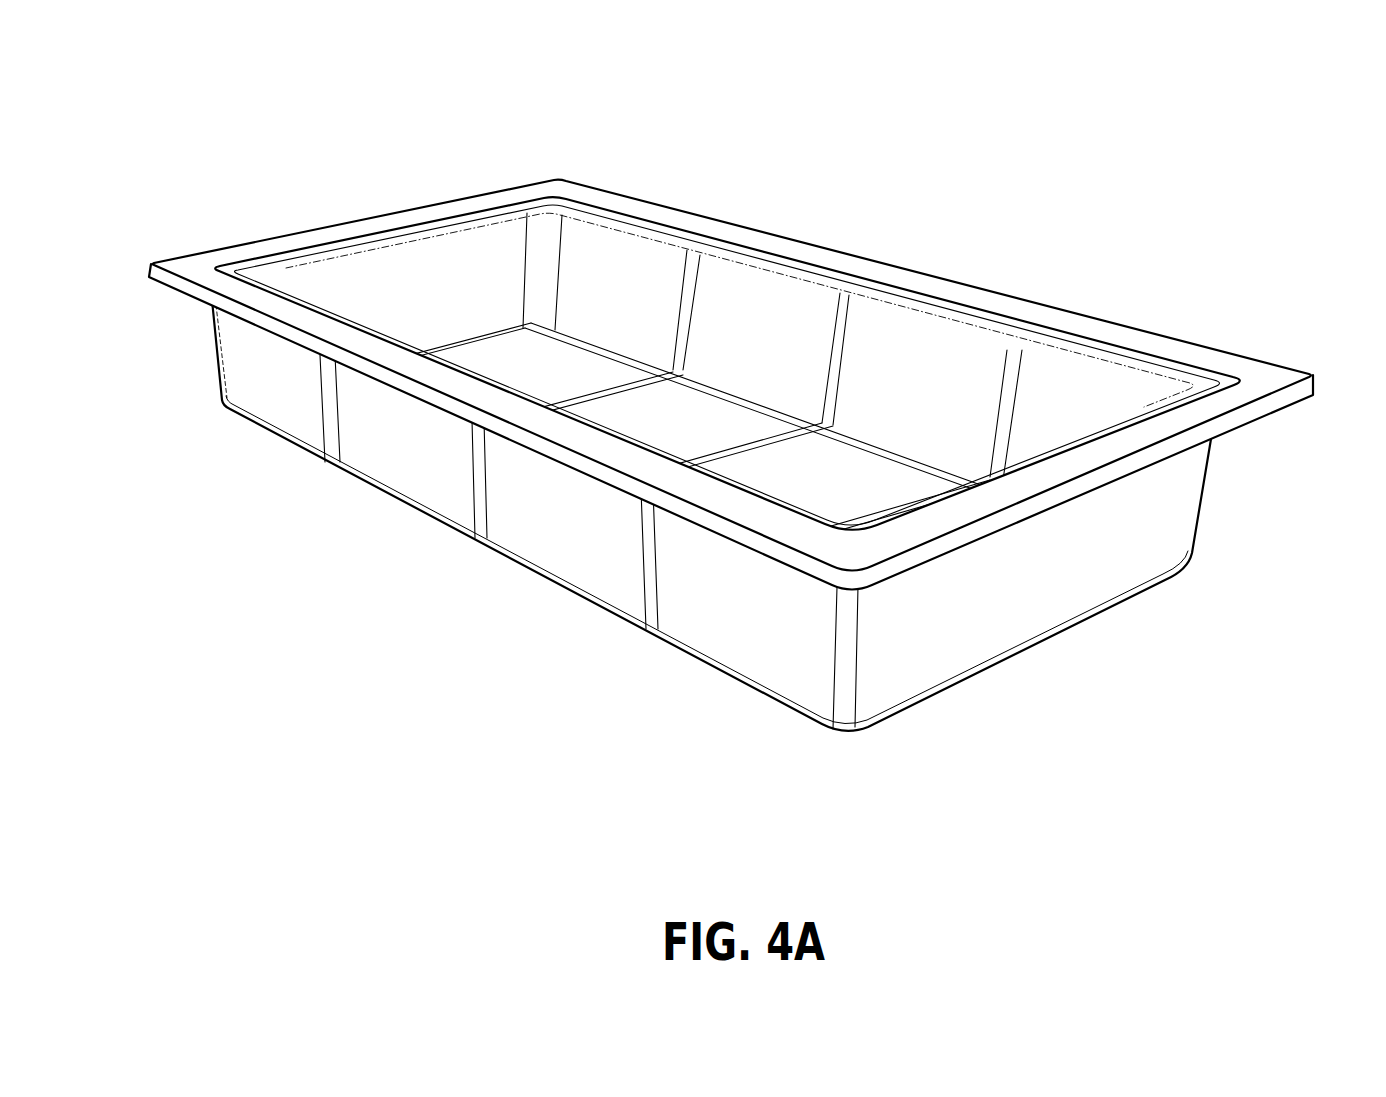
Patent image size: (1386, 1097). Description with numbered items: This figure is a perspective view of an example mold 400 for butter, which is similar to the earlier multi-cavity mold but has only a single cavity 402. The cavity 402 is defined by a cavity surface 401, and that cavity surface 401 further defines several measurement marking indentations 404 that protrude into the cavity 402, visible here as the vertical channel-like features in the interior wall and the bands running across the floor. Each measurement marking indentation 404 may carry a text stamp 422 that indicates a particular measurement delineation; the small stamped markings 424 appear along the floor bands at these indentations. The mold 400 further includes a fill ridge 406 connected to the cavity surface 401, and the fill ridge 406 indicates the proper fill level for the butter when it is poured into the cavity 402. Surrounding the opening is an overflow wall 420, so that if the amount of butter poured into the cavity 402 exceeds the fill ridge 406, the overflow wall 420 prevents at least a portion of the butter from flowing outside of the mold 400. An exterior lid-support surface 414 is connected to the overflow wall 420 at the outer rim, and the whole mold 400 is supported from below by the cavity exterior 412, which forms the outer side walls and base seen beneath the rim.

The mold 400 is at (752, 384).
The cavity surface 401 is at (1047, 372).
The cavity 402 is at (1081, 379).
The measurement marking indentation 404 is at (1014, 352).
The fill ridge 406 is at (918, 300).
The cavity exterior 412 is at (708, 603).
The exterior lid-support surface 414 is at (1271, 380).
The overflow wall 420 is at (752, 368).
The text stamp 422 is at (669, 351).
The divider label 424 is at (589, 389).